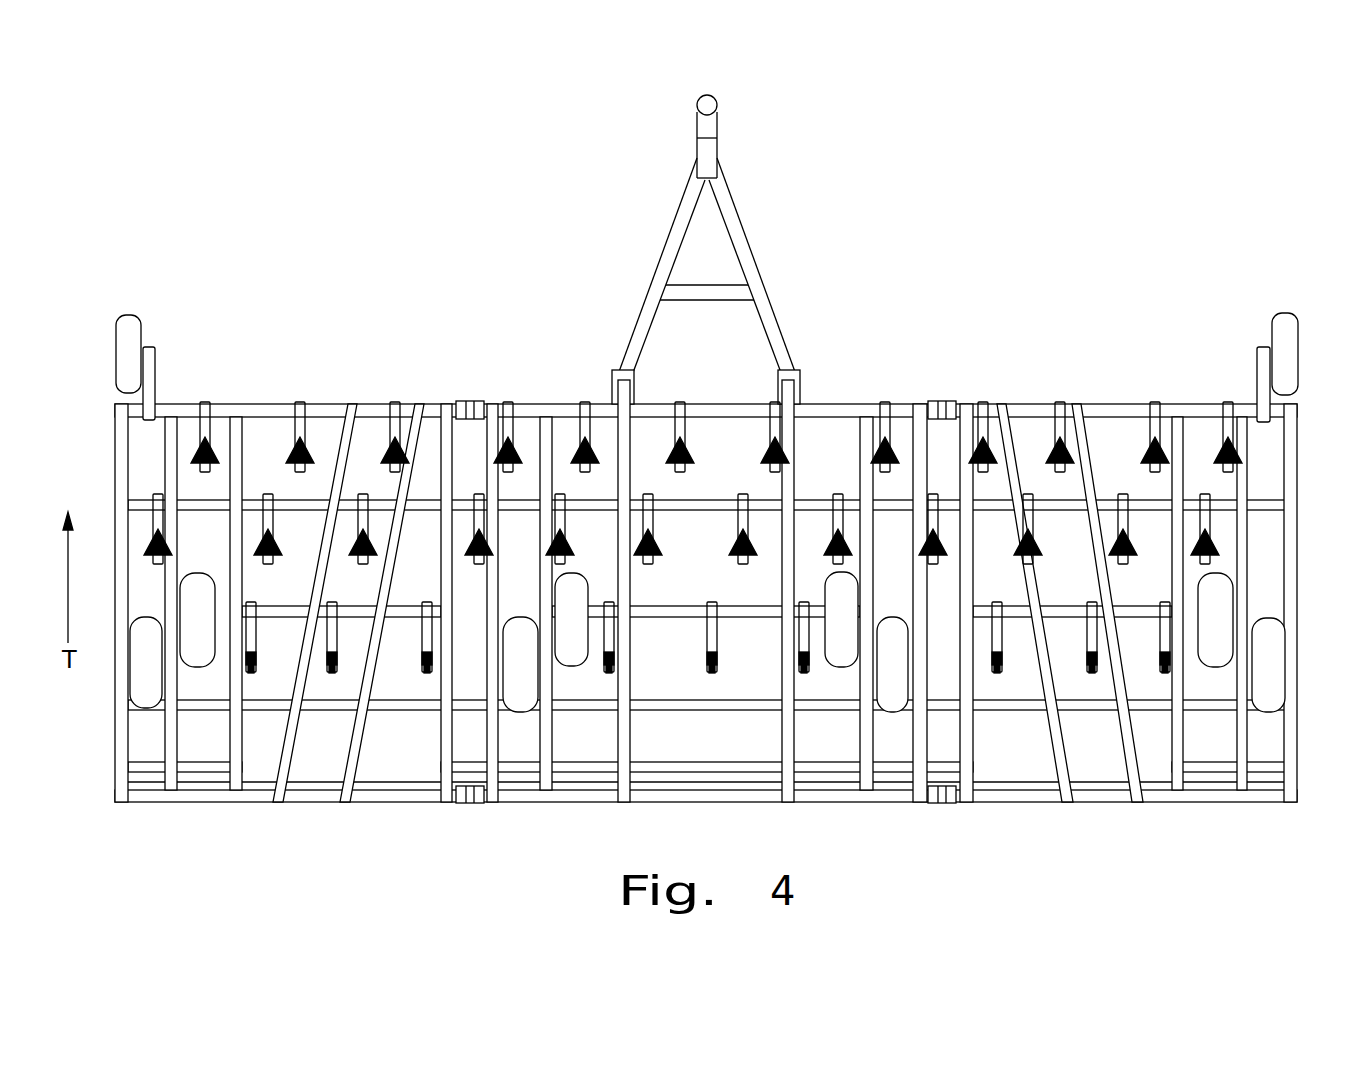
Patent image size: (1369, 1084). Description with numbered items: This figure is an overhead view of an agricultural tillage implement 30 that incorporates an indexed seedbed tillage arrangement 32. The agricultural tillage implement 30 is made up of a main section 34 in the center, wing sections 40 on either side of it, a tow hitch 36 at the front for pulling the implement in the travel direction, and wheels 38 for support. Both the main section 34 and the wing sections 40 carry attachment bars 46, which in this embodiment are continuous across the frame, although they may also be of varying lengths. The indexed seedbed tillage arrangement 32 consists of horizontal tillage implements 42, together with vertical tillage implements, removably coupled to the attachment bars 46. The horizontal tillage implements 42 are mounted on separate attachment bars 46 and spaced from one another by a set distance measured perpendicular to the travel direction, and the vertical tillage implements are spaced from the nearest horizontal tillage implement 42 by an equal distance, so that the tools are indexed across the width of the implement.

The agricultural tillage implement 30 is at (350, 292).
The indexed seedbed tillage arrangement 32 is at (1182, 322).
The main section 34 is at (563, 408).
The tow hitch 36 is at (717, 134).
The wheels 38 is at (145, 710).
The wing sections 40 is at (258, 404).
The horizontal tillage implements 42 is at (150, 550).
The attachment bars 46 is at (140, 498).